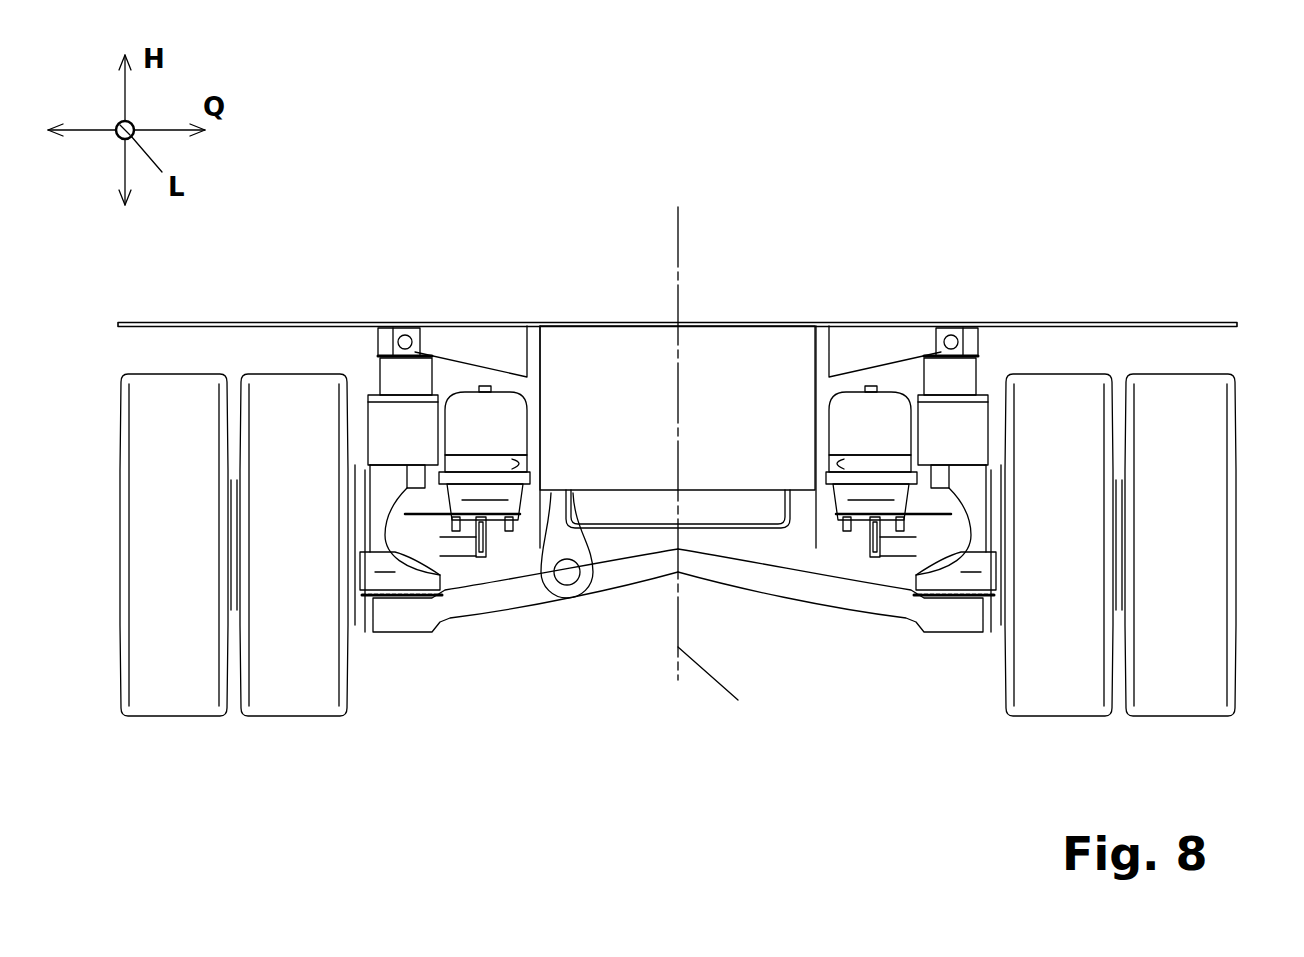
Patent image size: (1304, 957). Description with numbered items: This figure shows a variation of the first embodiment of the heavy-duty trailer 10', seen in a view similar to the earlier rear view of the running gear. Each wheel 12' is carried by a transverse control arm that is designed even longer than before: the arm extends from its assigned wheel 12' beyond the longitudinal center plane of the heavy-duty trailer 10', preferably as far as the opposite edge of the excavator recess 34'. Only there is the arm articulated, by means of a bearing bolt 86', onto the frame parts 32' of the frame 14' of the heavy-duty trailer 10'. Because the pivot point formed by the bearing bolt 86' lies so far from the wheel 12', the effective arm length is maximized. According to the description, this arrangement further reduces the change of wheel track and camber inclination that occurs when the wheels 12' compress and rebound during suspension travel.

The heavy-duty trailer 10' is at (711, 417).
The wheel 12' is at (712, 536).
The frame 14' is at (677, 262).
The frame part 32' is at (678, 633).
The excavator recess 34' is at (677, 371).
The bearing bolt 86' is at (568, 599).